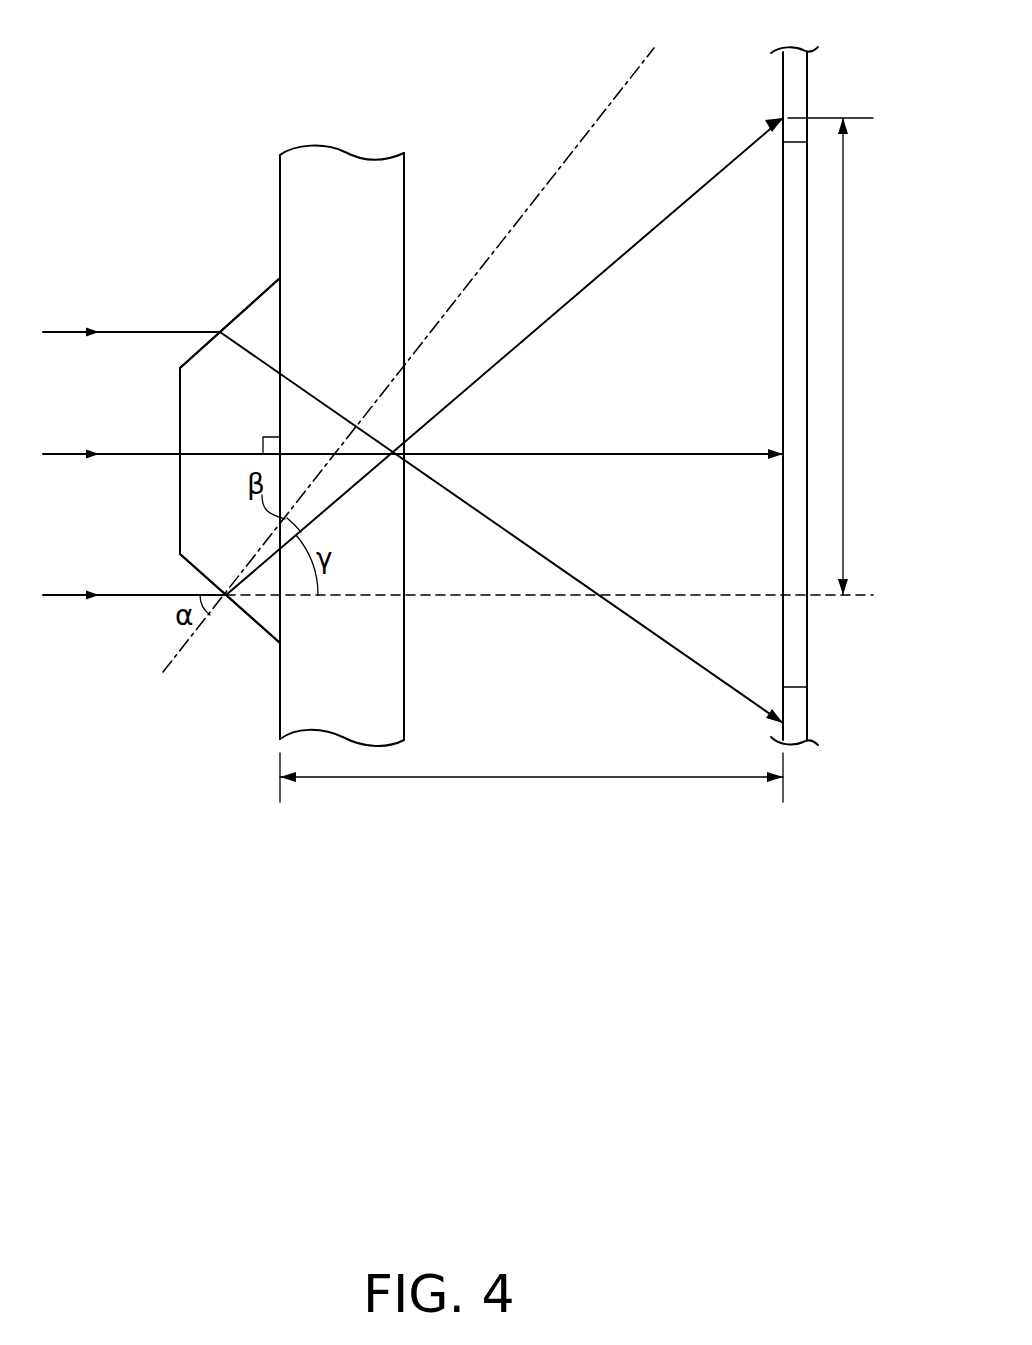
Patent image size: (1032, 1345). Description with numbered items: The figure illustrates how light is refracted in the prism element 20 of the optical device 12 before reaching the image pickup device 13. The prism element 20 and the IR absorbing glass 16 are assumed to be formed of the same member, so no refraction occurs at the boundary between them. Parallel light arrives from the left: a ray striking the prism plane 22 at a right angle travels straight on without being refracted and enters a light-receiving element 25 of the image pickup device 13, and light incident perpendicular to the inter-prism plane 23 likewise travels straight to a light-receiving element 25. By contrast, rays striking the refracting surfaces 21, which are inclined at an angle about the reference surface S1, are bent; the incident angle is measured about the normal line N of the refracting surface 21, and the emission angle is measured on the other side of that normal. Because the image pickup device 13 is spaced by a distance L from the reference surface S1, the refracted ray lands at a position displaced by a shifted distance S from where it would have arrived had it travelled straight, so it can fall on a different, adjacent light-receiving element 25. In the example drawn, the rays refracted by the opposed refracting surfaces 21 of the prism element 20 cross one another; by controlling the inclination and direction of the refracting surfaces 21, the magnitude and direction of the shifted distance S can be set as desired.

The optical device 12 is at (290, 415).
The image pickup device 13 is at (796, 378).
The IR absorbing glass 16 is at (394, 195).
The prism element 20 is at (261, 300).
The refracting surface 21 is at (233, 318).
The prism plane 22 is at (180, 410).
The inter-prism plane 23 is at (279, 237).
The light-receiving element 25 is at (793, 312).
The normal line N is at (168, 668).
The reference surface S1 is at (279, 693).
The shifted distance S is at (834, 356).
The distance L is at (531, 786).